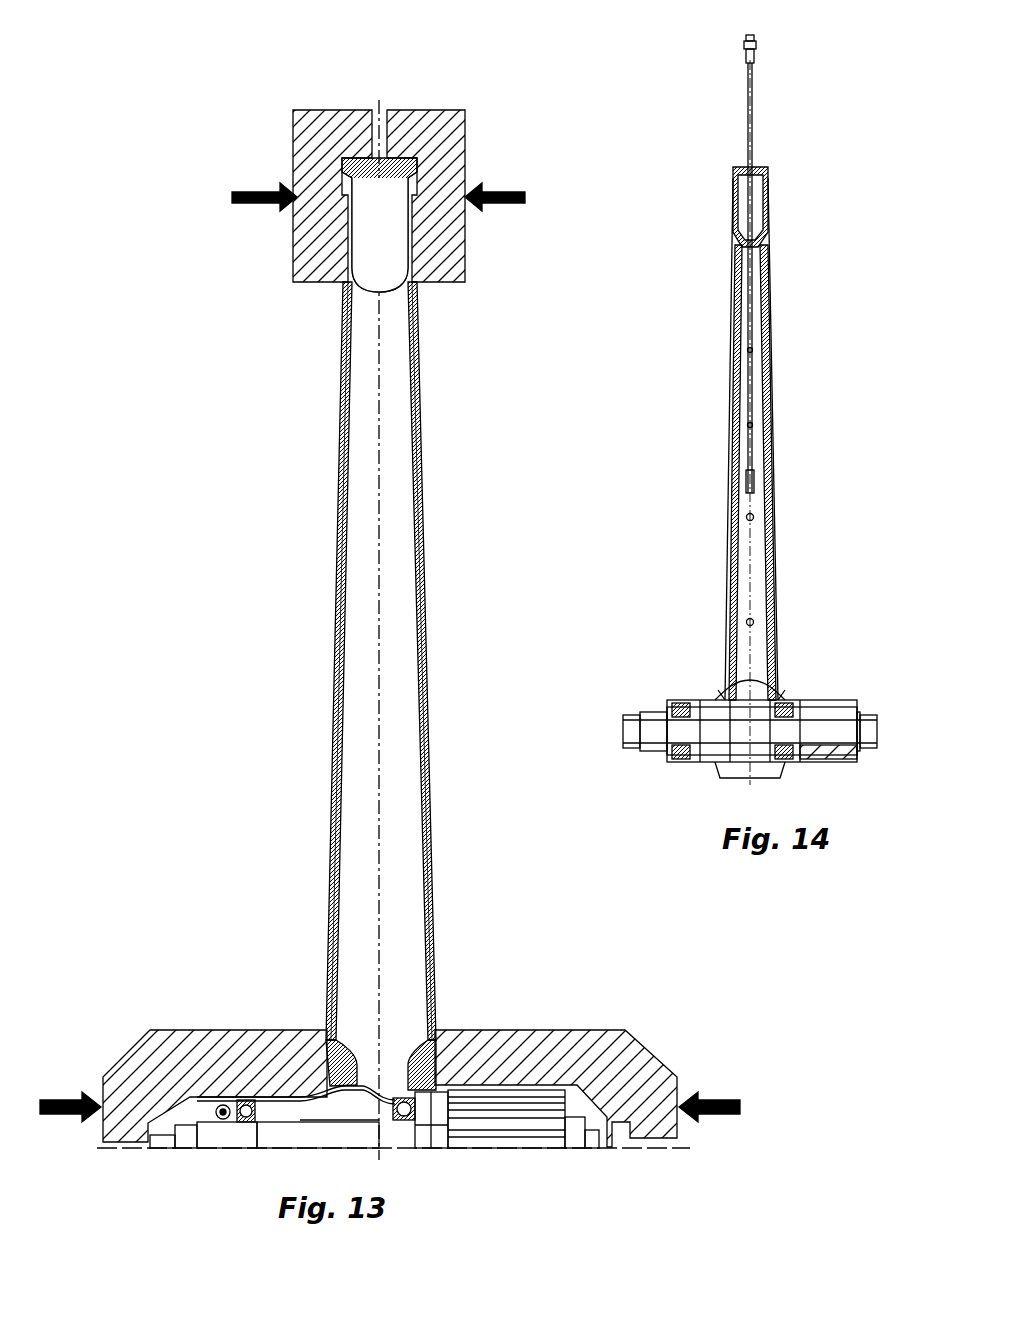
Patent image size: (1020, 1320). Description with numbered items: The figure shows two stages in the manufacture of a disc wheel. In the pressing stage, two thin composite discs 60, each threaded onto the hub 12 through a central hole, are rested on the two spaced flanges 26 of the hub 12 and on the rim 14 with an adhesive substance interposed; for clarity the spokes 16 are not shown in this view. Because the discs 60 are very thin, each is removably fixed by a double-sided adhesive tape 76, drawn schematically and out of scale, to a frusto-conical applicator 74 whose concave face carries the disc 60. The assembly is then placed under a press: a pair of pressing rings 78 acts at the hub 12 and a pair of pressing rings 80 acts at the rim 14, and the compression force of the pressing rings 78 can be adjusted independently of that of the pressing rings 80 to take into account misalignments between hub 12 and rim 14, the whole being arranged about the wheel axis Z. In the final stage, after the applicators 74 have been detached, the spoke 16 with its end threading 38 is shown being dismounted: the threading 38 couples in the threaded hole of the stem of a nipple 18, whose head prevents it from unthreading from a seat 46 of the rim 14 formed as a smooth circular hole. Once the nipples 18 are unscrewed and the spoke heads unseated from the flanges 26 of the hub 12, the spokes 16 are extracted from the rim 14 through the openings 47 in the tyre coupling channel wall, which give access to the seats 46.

In FIG. 13, the hub 12 is at (487, 1058).
In FIG. 14, the hub 12 is at (683, 680).
In FIG. 13, the rim 14 is at (361, 624).
In FIG. 14, the rim 14 is at (724, 411).
In FIG. 14, the spoke 16 is at (727, 107).
In FIG. 14, the nipple 18 is at (727, 50).
In FIG. 13, the flange 26 is at (348, 1062).
In FIG. 14, the flange 26 is at (730, 692).
In FIG. 14, the threading 38 is at (758, 65).
In FIG. 14, the seat 46 is at (758, 240).
In FIG. 14, the opening 47 is at (755, 177).
In FIG. 13, the disc 60 is at (342, 442).
In FIG. 14, the disc 60 is at (773, 490).
In FIG. 13, the applicator 74 is at (337, 513).
In FIG. 13, the double-sided adhesive tape 76 is at (413, 365).
In FIG. 13, the pressing ring 78 is at (163, 1043).
In FIG. 13, the pressing ring 80 is at (303, 142).
In FIG. 13, the axis Z is at (607, 1147).
In FIG. 14, the axis Z is at (805, 727).